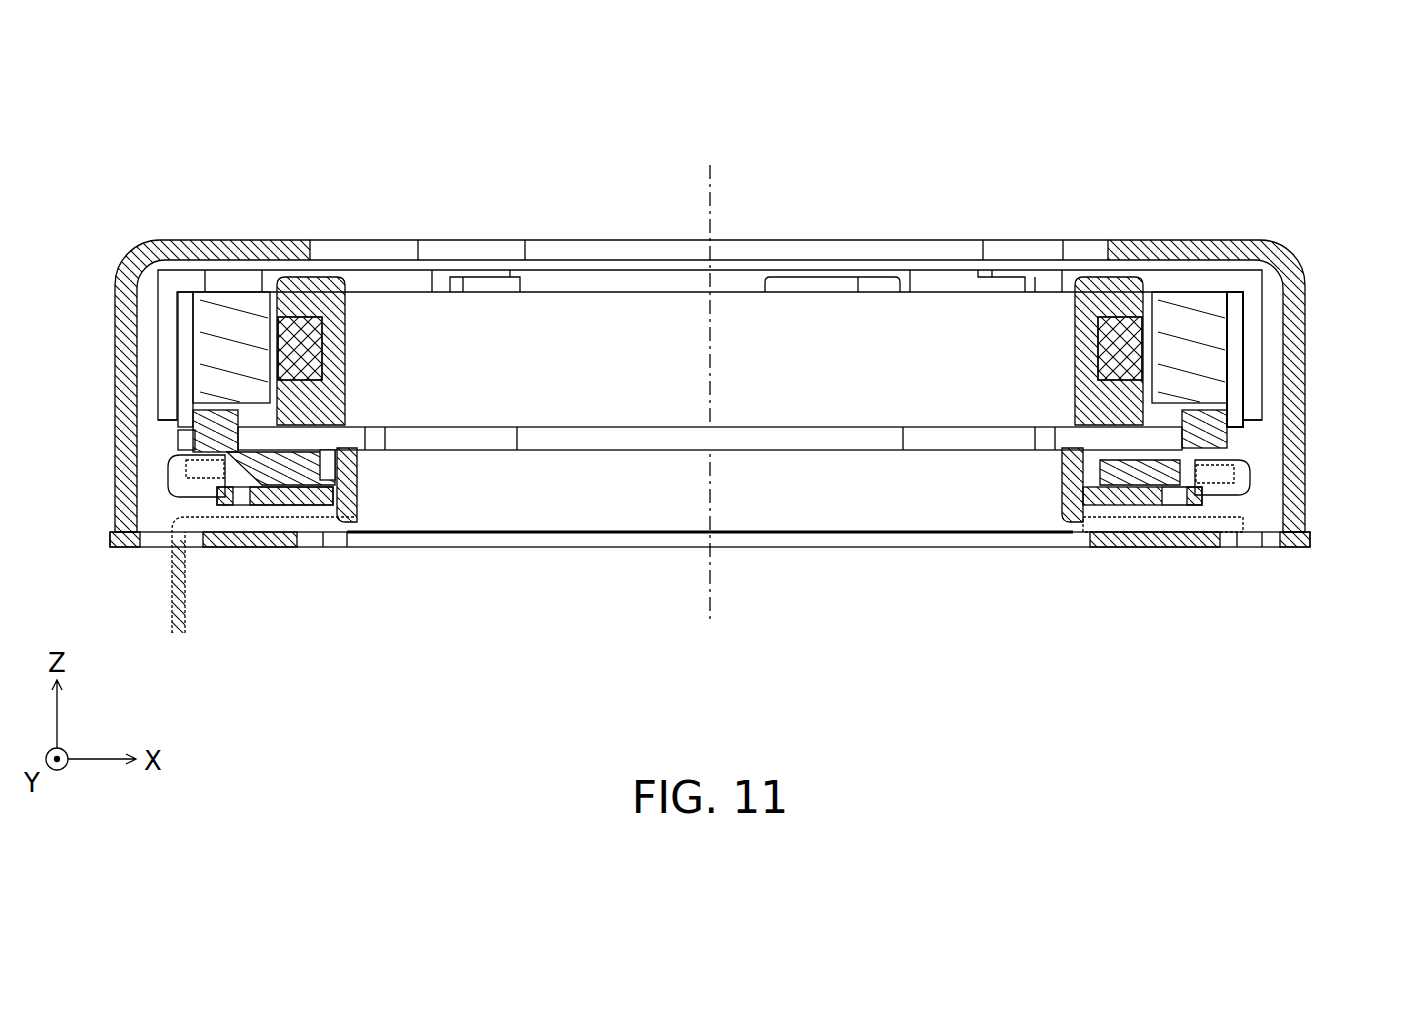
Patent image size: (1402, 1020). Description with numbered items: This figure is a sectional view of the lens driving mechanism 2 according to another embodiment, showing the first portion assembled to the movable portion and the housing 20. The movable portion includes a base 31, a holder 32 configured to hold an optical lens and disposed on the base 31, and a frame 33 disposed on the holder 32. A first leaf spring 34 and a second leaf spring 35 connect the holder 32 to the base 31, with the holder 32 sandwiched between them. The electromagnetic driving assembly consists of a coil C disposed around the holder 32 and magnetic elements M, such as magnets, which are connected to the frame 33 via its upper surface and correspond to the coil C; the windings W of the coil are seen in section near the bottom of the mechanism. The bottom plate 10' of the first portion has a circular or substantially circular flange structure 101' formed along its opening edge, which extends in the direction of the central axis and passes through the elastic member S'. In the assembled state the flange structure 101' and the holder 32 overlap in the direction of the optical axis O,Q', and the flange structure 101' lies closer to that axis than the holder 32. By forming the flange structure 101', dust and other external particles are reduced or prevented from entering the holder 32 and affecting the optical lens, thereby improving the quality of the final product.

The lens driving mechanism 2 is at (96, 88).
The bottom plate 10' is at (712, 583).
The housing 20 is at (125, 491).
The base 31 is at (290, 505).
The holder 32 is at (333, 300).
The frame 33 is at (167, 296).
The first leaf spring 34 is at (190, 290).
The second leaf spring 35 is at (1186, 384).
The coil C is at (290, 342).
The magnetic elements M is at (228, 345).
The winding W is at (195, 478).
The elastic member S' is at (703, 549).
The flange structure 101' is at (710, 548).
The optical axis and central axis O,Q' is at (710, 392).